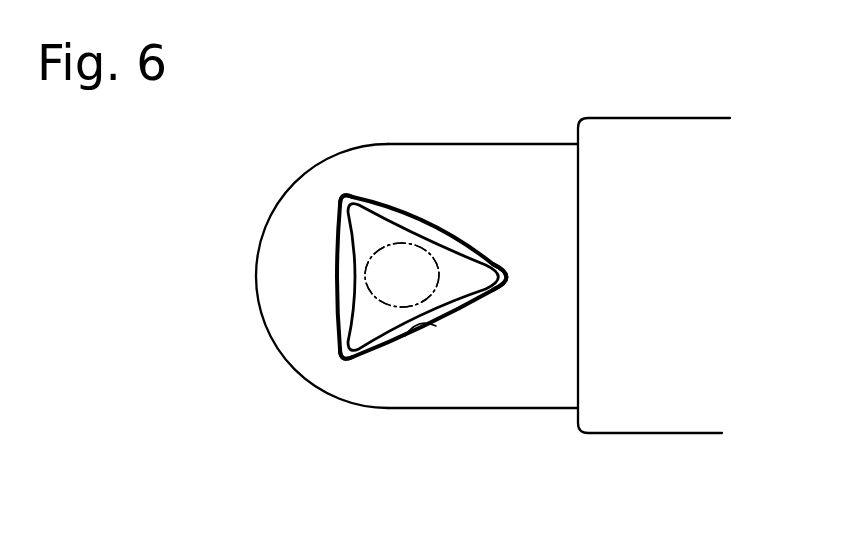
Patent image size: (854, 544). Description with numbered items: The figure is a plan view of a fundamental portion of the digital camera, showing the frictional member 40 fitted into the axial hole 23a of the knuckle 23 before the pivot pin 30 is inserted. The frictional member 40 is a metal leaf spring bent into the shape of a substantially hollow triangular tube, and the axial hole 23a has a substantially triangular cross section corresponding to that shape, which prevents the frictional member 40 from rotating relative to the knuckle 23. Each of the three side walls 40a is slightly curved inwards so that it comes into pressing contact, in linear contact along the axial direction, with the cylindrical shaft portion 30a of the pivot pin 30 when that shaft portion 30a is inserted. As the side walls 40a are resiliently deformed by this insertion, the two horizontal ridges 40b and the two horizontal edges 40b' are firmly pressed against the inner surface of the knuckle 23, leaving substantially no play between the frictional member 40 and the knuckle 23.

The knuckle 23 is at (503, 377).
The axial hole 23a is at (467, 300).
The pivot pin 30 is at (400, 306).
The cylindrical shaft portion 30a is at (402, 275).
The frictional member 40 is at (438, 238).
The side walls 40a is at (395, 213).
The horizontal ridges 40b is at (270, 259).
The horizontal edges 40b' is at (577, 268).